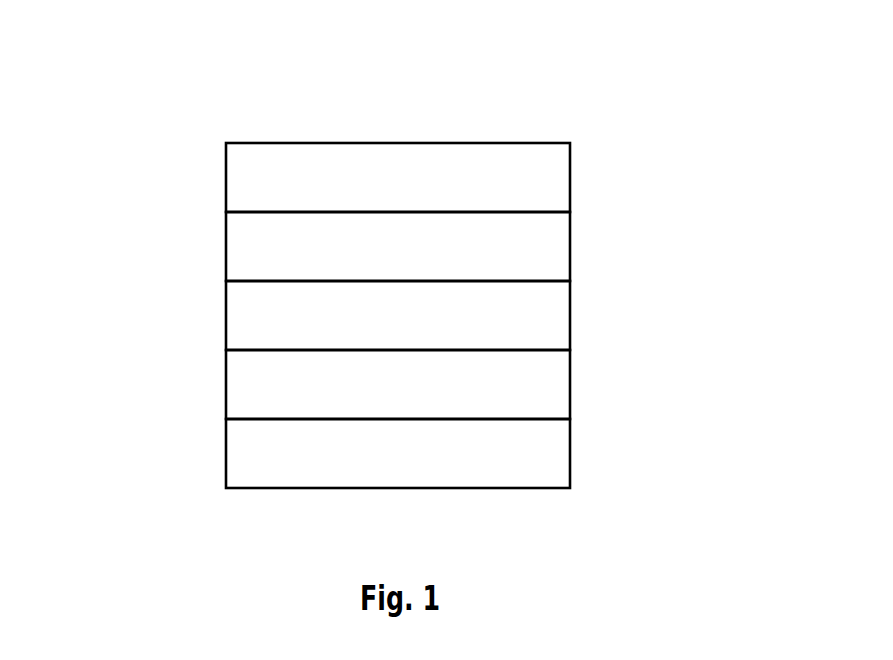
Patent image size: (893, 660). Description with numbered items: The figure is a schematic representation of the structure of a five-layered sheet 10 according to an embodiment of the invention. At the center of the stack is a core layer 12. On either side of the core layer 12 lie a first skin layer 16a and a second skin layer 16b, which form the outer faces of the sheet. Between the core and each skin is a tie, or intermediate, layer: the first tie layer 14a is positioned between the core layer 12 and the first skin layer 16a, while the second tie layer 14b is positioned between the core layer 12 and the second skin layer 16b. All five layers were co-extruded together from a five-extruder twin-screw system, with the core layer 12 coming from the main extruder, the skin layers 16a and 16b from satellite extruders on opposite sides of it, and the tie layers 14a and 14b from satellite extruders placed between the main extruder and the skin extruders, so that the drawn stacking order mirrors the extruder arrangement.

The five-layered sheet 10 is at (412, 253).
The core layer 12 is at (319, 315).
The first tie layer 14a is at (311, 246).
The second tie layer 14b is at (311, 384).
The first skin layer 16a is at (311, 177).
The second skin layer 16b is at (311, 453).